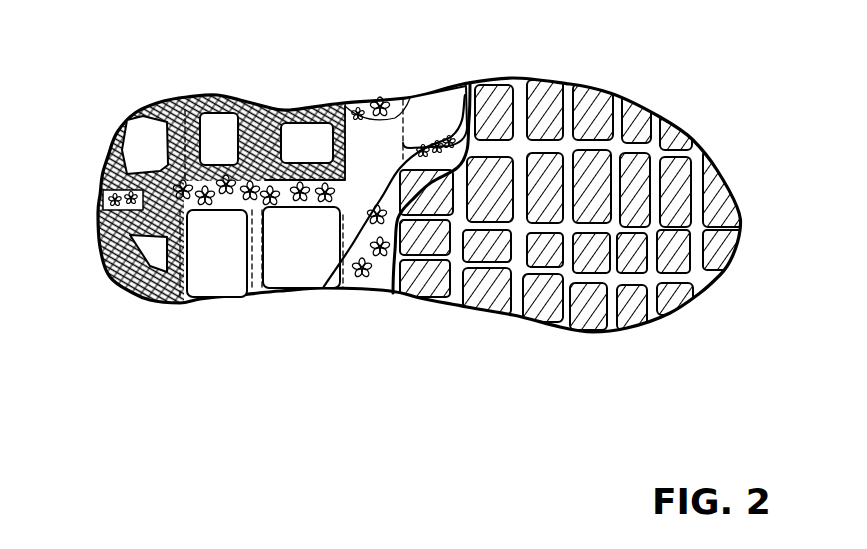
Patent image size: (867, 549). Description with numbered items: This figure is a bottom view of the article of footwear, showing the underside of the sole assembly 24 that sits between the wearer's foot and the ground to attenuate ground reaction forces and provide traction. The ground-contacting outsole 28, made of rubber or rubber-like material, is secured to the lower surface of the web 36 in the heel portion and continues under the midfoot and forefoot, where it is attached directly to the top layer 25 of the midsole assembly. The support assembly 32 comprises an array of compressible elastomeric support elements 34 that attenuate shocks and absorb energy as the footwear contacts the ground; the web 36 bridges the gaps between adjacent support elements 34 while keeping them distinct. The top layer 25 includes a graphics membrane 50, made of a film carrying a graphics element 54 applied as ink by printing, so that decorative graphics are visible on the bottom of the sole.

The sole assembly 24 is at (667, 318).
The top layer 25 is at (390, 290).
The outsole 28 is at (110, 180).
The support assembly 32 is at (365, 157).
The support element 34 is at (145, 147).
The web 36 is at (383, 143).
The graphics membrane 50 is at (330, 290).
The graphics element 54 is at (350, 290).